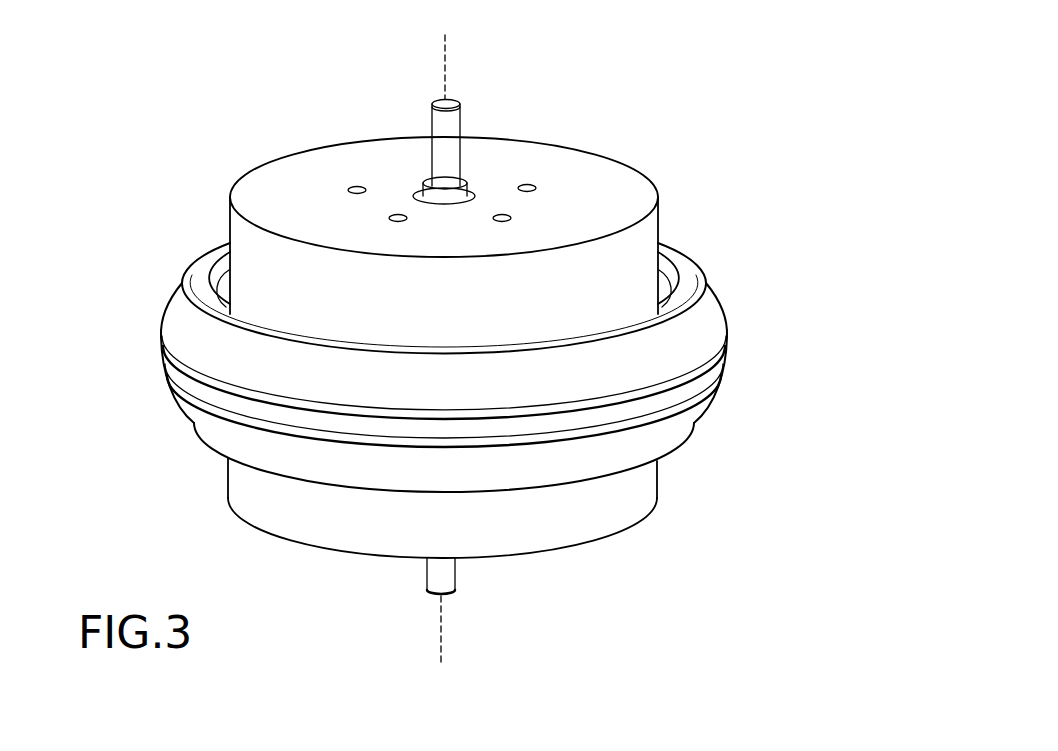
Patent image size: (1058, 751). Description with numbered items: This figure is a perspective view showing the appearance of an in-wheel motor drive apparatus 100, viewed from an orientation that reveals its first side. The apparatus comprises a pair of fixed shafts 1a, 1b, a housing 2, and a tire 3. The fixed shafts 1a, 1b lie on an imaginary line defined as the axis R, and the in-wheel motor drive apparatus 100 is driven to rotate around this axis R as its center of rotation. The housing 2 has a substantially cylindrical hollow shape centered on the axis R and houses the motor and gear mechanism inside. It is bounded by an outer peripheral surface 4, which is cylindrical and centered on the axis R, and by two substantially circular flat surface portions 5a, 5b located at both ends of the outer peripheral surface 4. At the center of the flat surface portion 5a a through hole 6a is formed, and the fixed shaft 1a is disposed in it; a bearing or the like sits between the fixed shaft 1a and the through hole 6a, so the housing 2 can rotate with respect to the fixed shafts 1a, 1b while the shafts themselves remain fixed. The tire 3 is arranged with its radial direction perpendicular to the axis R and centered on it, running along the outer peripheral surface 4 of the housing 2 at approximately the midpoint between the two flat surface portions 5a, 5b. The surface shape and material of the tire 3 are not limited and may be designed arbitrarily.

The in-wheel motor drive apparatus 100 is at (335, 118).
The axis R is at (447, 58).
The fixed shaft 1a is at (450, 142).
The fixed shaft 1b is at (457, 583).
The housing 2 is at (596, 172).
The tire 3 is at (709, 331).
The outer peripheral surface 4 is at (640, 263).
The flat surface portion 5a is at (268, 184).
The flat surface portion 5b is at (266, 535).
The through hole 6a is at (414, 190).